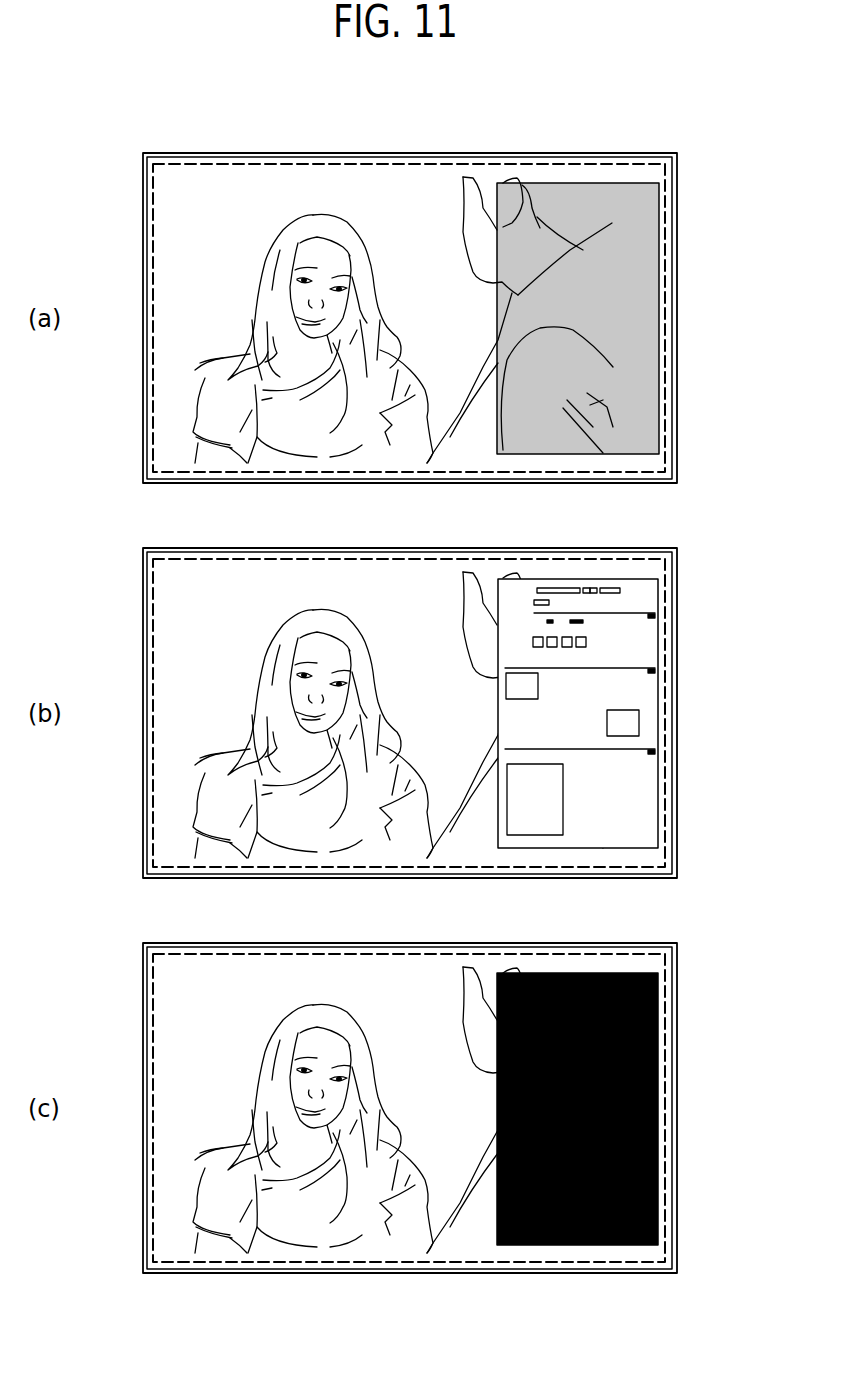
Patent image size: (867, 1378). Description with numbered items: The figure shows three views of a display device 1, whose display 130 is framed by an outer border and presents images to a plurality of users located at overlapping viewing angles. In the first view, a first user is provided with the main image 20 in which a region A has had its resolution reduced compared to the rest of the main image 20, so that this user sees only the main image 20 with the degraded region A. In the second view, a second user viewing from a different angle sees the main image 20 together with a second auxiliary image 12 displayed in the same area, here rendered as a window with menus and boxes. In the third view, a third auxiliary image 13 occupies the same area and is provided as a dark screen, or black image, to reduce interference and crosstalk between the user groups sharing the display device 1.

The display device 1 is at (697, 188).
The display 130 is at (677, 258).
The region A is at (660, 330).
The main image 20 is at (665, 405).
The second auxiliary image 12 is at (623, 713).
The third auxiliary image 13 is at (622, 1109).